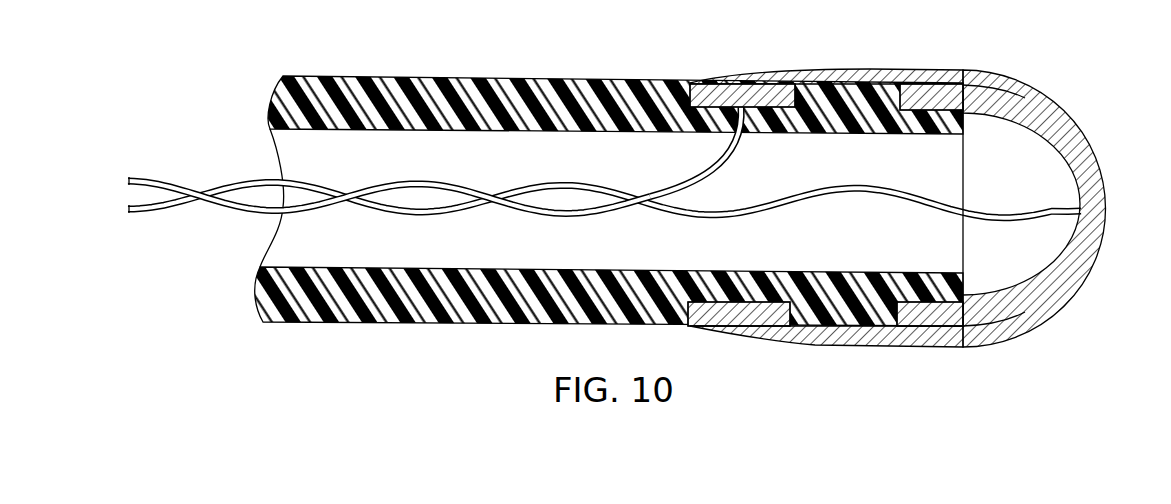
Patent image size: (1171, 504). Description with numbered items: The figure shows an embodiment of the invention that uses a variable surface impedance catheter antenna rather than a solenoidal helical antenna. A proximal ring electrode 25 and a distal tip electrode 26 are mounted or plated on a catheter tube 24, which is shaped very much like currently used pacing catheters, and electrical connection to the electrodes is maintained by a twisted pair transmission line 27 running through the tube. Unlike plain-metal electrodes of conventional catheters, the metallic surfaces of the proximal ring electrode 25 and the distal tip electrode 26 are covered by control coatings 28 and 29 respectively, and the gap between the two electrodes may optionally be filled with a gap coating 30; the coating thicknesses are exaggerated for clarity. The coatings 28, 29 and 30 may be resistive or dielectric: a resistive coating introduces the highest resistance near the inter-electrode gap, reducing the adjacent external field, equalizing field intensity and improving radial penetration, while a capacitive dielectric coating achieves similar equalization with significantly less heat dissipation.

The catheter tube 24 is at (278, 86).
The proximal ring electrode 25 is at (710, 100).
The distal tip electrode 26 is at (1098, 168).
The twisted pair transmission line 27 is at (201, 195).
The control coating 28 is at (978, 72).
The control coating 29 is at (768, 73).
The gap coating 30 is at (847, 71).